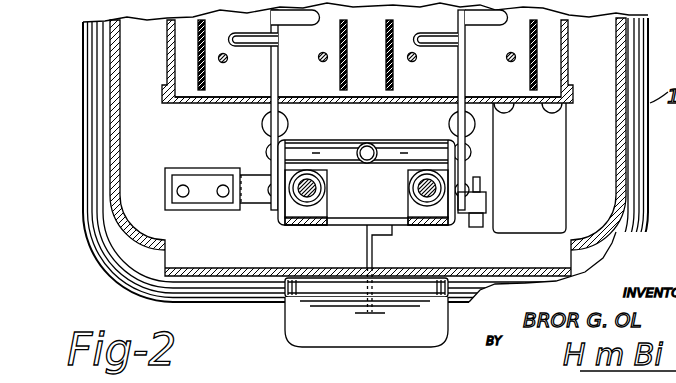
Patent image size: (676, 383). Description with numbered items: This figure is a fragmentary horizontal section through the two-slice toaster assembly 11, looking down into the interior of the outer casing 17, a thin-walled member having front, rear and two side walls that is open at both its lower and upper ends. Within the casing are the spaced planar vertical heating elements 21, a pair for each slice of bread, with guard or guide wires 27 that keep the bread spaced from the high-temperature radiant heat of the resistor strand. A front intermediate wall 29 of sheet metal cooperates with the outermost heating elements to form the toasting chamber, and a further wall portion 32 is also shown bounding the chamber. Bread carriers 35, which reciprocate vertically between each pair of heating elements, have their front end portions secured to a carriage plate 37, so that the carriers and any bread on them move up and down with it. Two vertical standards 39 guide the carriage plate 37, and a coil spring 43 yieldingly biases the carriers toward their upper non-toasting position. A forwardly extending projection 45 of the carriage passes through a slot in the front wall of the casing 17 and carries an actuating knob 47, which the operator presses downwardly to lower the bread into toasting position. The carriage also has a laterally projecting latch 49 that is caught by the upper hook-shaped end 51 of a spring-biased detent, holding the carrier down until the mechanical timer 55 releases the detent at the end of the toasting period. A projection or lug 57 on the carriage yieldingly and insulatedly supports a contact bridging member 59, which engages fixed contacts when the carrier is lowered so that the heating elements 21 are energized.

The toaster assembly 11 is at (47, 86).
The outer casing 17 is at (116, 136).
The heating elements 21 is at (207, 78).
The guard or guide wires 27 is at (320, 61).
The front intermediate wall 29 is at (220, 104).
The tray side wall 32 is at (167, 56).
The bread carriers 35 is at (276, 56).
The carriage plate 37 is at (427, 226).
The vertical standards 39 is at (410, 188).
The coil spring 43 is at (371, 143).
The forwardly extending projection 45 is at (367, 248).
The actuating knob 47 is at (337, 346).
The latch 49 is at (467, 216).
The hook-shaped end of detent 51 is at (481, 172).
The mechanical timer 55 is at (563, 166).
The projection or lug 57 is at (252, 210).
The contact bridging member 59 is at (197, 212).